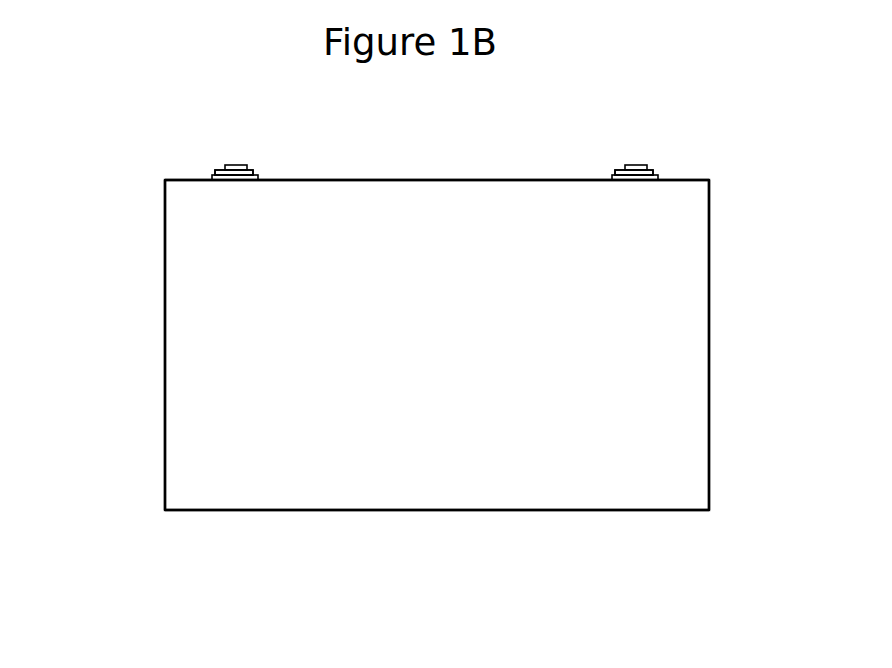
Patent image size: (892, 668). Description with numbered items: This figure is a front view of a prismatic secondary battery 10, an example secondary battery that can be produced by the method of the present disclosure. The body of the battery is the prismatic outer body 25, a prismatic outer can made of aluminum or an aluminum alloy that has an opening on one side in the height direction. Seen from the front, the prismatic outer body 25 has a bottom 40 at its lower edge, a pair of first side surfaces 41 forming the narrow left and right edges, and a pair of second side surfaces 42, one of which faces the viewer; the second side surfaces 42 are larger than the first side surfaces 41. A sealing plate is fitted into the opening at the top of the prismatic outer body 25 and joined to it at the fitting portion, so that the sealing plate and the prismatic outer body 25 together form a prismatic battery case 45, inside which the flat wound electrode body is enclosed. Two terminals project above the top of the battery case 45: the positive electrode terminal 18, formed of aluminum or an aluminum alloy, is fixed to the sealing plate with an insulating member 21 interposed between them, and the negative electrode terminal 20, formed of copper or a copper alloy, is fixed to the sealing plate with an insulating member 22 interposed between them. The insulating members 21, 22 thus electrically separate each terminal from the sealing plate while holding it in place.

The prismatic secondary battery 10 is at (440, 92).
The positive electrode terminal 18 is at (633, 165).
The negative electrode terminal 20 is at (233, 165).
The insulating member 21 is at (652, 172).
The insulating member 22 is at (255, 172).
The prismatic outer body 25 is at (206, 318).
The bottom 40 is at (417, 512).
The first side surfaces 41 is at (164, 262).
The second side surfaces 42 is at (237, 385).
The battery case 45 is at (437, 216).